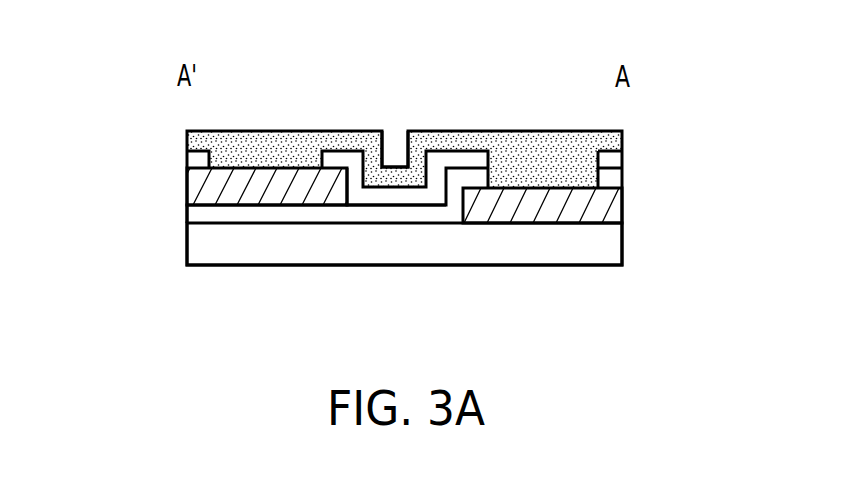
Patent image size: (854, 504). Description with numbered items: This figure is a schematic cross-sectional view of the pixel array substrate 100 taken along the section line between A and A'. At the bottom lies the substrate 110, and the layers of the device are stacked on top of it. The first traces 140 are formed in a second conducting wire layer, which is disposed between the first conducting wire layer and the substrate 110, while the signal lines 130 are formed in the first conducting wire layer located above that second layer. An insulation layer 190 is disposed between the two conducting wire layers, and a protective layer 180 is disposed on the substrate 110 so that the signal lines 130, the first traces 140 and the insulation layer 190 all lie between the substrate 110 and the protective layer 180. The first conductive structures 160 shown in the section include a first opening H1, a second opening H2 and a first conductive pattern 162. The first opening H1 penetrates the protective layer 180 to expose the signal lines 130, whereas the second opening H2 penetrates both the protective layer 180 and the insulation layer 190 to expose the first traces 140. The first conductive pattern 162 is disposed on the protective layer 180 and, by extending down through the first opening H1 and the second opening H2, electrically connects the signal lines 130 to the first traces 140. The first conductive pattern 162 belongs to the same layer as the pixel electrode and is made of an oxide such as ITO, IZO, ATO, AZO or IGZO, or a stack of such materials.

The pixel array substrate 100 is at (648, 335).
The substrate 110 is at (210, 246).
The signal lines 130 is at (203, 190).
The first traces 140 is at (605, 210).
The first conductive structures 160 is at (415, 42).
The first conductive pattern 162 is at (304, 142).
The protective layer 180 is at (203, 159).
The insulation layer 190 is at (203, 213).
The first opening H1 is at (275, 157).
The second opening H2 is at (518, 146).